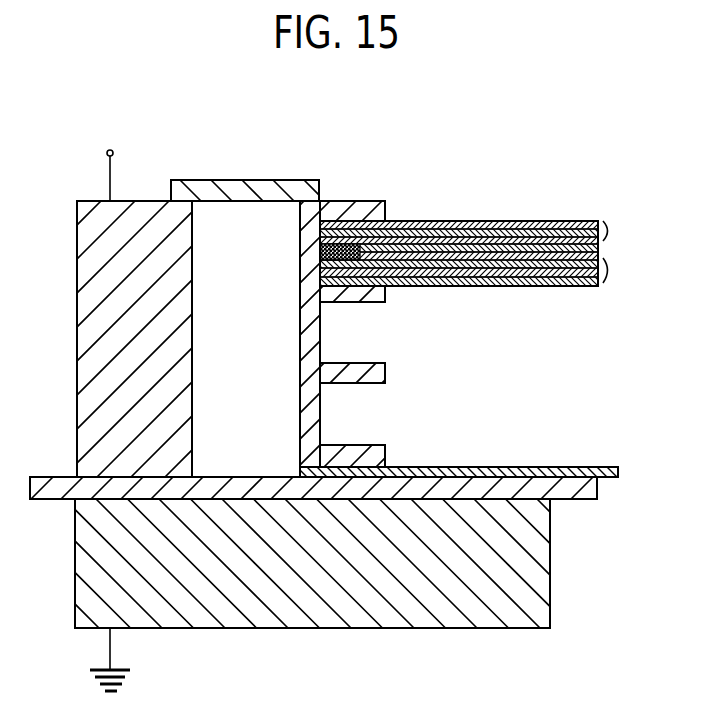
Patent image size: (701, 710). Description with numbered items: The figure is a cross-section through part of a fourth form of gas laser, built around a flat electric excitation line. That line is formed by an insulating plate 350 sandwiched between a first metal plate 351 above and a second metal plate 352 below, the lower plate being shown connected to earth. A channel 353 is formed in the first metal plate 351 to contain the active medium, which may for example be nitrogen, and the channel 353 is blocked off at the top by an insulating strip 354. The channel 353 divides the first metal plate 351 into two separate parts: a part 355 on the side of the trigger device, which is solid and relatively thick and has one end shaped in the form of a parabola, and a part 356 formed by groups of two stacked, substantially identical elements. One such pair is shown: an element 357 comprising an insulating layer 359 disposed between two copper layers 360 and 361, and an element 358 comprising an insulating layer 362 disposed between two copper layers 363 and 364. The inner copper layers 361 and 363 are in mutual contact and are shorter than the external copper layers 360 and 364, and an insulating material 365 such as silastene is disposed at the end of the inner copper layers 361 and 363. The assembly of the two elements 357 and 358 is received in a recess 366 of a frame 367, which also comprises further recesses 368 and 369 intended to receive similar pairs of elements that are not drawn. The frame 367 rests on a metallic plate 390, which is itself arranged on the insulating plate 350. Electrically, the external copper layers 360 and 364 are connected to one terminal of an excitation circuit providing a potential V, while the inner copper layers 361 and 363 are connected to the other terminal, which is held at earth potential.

The insulating plate 350 is at (72, 490).
The first metal plate 351 is at (144, 197).
The second metal plate 352 is at (521, 570).
The channel 353 is at (212, 230).
The insulating strip 354 is at (288, 190).
The part of metal plate 355 is at (104, 305).
The part of metal plate 356 is at (399, 213).
The element 357 is at (614, 229).
The element 358 is at (614, 265).
The insulating layer 359 is at (497, 221).
The copper layer 360 is at (572, 221).
The copper layer 361 is at (430, 221).
The insulating layer 362 is at (492, 280).
The copper layer 363 is at (556, 280).
The copper layer 364 is at (432, 280).
The insulating material 365 is at (320, 254).
The recess 366 is at (318, 231).
The frame 367 is at (297, 400).
The recess 368 is at (366, 336).
The recess 369 is at (368, 410).
The metallic plate 390 is at (578, 468).